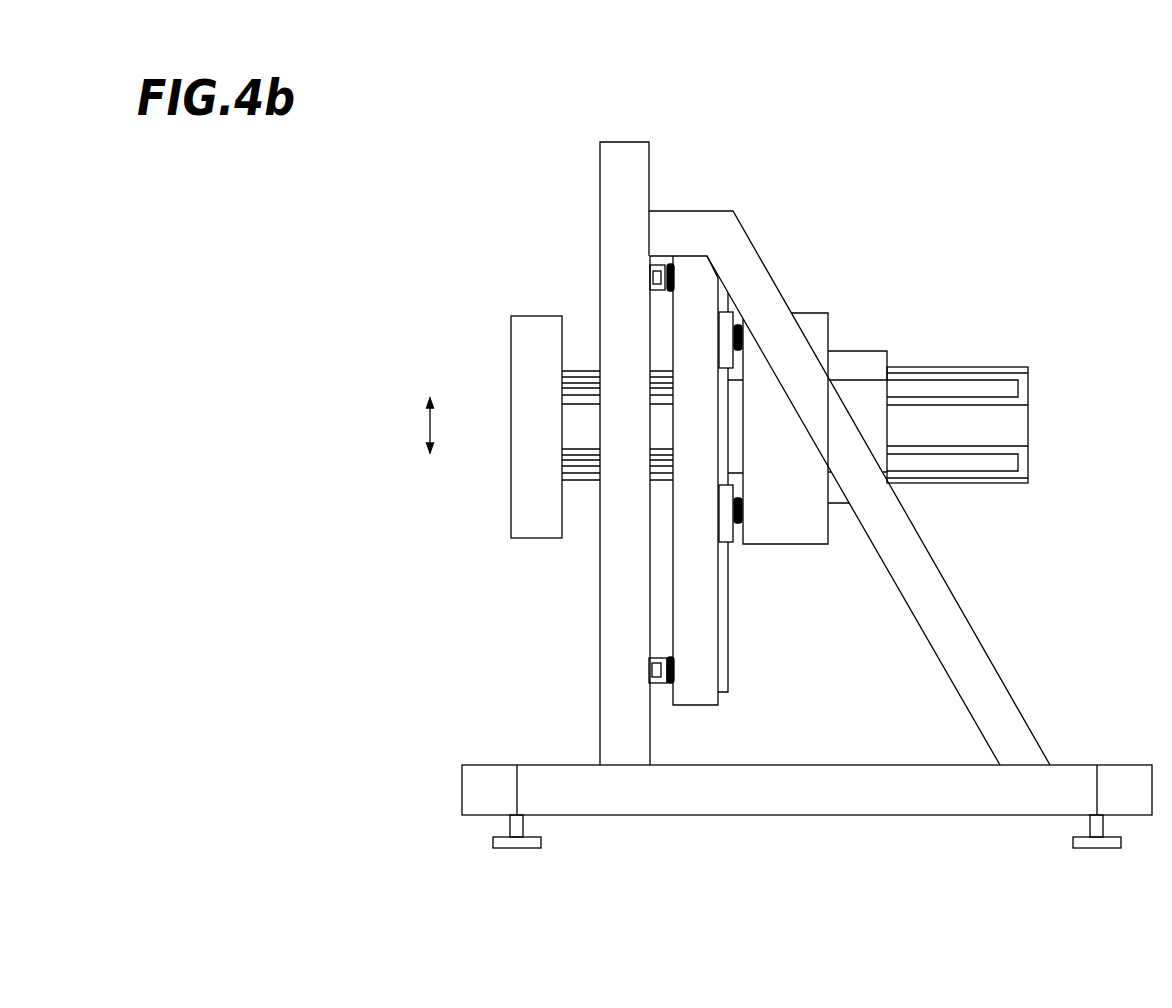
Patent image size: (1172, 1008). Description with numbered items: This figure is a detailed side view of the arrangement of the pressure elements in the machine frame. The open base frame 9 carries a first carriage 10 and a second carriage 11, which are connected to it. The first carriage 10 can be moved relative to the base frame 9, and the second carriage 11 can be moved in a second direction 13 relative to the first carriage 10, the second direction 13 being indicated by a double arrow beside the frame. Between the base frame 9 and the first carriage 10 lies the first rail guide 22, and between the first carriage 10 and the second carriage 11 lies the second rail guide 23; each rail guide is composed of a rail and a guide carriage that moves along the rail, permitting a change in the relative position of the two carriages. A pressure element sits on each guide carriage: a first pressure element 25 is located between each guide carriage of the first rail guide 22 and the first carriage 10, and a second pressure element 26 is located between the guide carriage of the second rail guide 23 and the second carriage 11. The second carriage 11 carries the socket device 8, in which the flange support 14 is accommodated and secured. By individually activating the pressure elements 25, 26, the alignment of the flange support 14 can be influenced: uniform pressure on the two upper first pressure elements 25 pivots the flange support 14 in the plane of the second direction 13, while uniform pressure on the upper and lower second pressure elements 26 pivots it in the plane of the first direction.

The socket device 8 is at (866, 366).
The base frame 9 is at (590, 157).
The first carriage 10 is at (697, 610).
The second carriage 11 is at (810, 523).
The second direction 13 is at (430, 427).
The flange support 14 is at (957, 413).
The first rail guide 22 is at (656, 257).
The second rail guide 23 is at (733, 552).
The first pressure element 25 is at (672, 258).
The second pressure element 26 is at (742, 316).